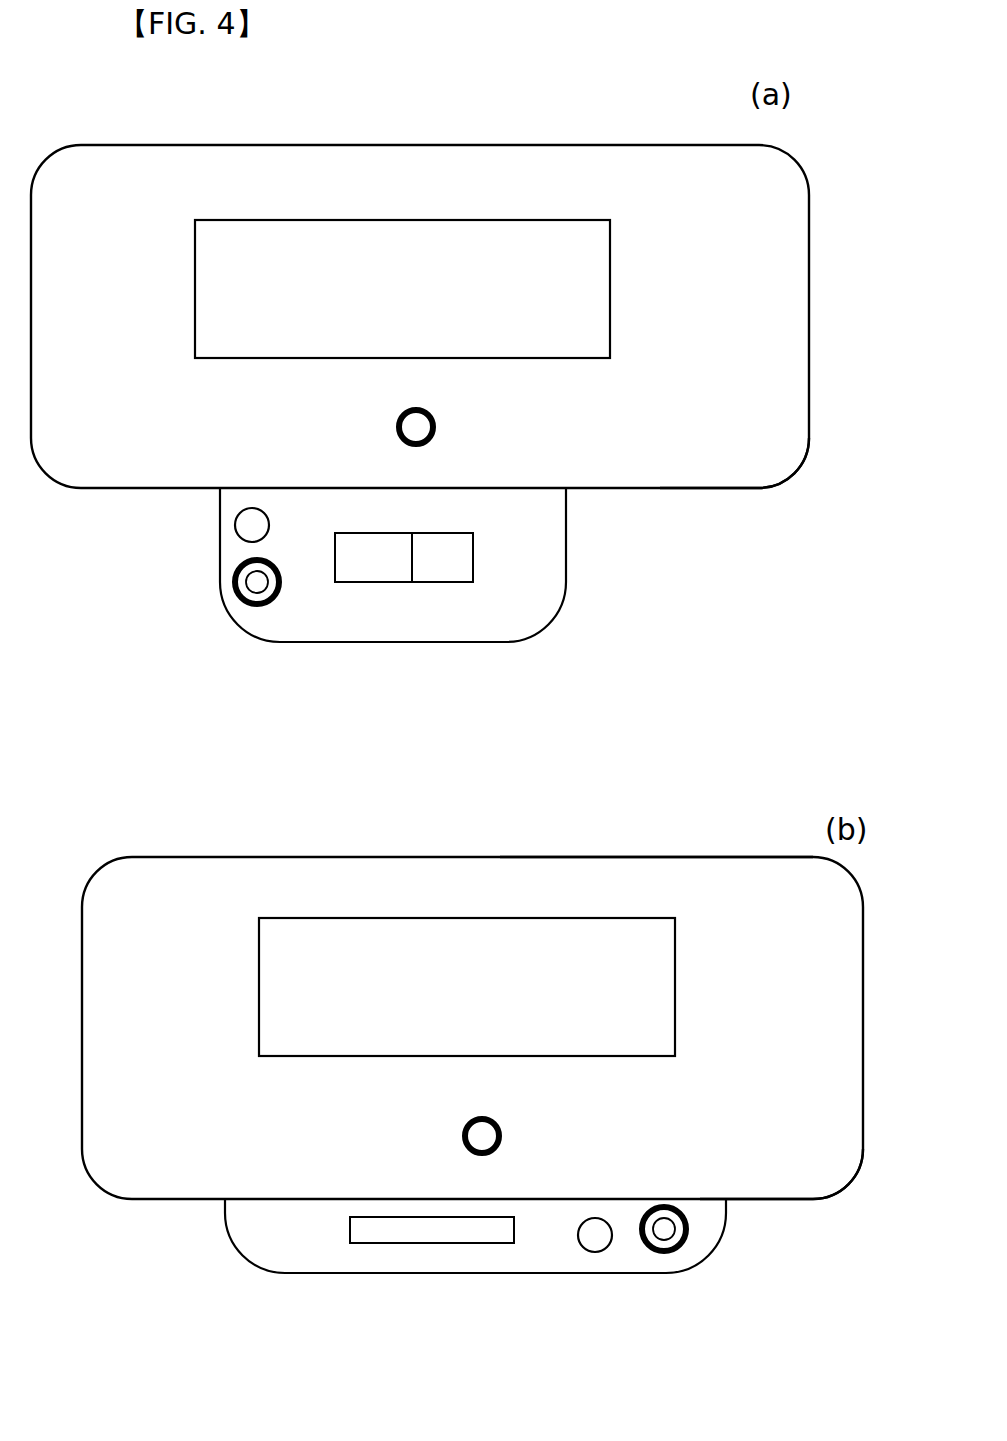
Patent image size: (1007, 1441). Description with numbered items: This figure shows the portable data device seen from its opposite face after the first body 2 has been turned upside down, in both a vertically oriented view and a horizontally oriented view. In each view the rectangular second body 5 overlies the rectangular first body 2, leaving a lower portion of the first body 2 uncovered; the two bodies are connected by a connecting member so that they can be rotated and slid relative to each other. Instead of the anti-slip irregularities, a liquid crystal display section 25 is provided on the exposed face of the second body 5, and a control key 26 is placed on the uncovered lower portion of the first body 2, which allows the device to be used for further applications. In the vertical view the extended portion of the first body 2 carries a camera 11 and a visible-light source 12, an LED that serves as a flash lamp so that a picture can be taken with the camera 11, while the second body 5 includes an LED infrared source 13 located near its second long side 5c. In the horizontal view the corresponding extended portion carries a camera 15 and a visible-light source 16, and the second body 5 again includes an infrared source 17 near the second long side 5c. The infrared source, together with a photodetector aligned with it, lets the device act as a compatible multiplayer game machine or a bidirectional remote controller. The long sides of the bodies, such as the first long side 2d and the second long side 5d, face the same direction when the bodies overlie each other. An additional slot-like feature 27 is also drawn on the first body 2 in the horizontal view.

The first body 2 is at (547, 577).
The first long side 2d is at (418, 1277).
The second body 5 is at (548, 170).
The second long side 5c is at (710, 483).
The second long side 5d is at (600, 855).
The camera 11 is at (247, 583).
The visible-light source 12 is at (233, 524).
The infrared source 13 is at (440, 432).
The camera 15 is at (672, 1240).
The visible-light source 16 is at (597, 1240).
The infrared source 17 is at (463, 1155).
The liquid crystal display section 25 is at (360, 233).
The control key 26 is at (360, 558).
The slot 27 is at (465, 1230).